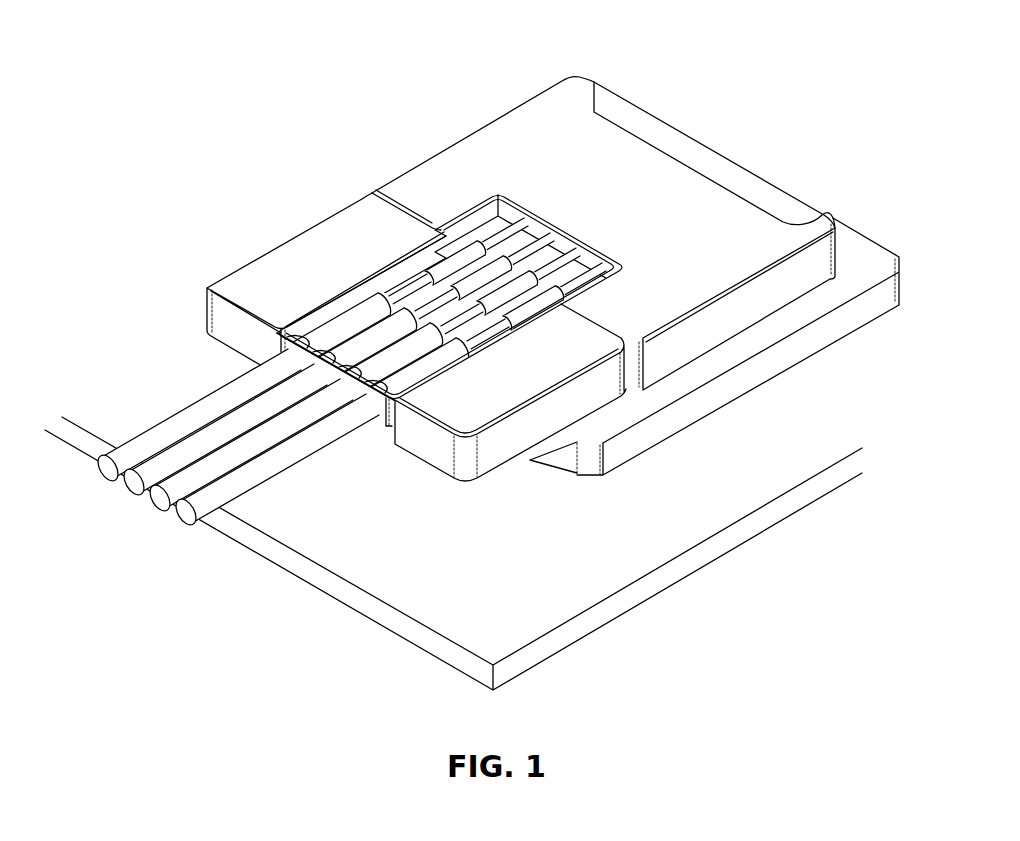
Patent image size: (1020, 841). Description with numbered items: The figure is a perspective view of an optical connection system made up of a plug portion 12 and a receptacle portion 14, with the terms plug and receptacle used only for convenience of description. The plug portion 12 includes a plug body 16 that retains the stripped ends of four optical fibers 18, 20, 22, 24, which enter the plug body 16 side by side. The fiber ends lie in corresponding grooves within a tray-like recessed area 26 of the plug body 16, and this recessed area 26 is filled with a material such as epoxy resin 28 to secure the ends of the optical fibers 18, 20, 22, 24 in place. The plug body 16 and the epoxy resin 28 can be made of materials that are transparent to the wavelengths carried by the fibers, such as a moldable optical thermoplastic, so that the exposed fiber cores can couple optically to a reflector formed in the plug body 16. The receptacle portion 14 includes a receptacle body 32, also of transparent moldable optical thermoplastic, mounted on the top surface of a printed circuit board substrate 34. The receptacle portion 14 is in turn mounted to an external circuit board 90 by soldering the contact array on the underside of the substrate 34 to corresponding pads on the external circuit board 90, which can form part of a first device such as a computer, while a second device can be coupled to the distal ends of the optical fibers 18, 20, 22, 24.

The plug portion 12 is at (446, 310).
The receptacle portion 14 is at (603, 208).
The plug body 16 is at (296, 230).
The optical fiber 18 is at (218, 471).
The optical fiber 20 is at (130, 488).
The optical fiber 22 is at (157, 503).
The optical fiber 24 is at (182, 522).
The tray-like recessed area 26 is at (449, 297).
The epoxy resin 28 is at (388, 402).
The receptacle body 32 is at (547, 86).
The printed circuit board substrate 34 is at (705, 412).
The external circuit board 90 is at (665, 588).